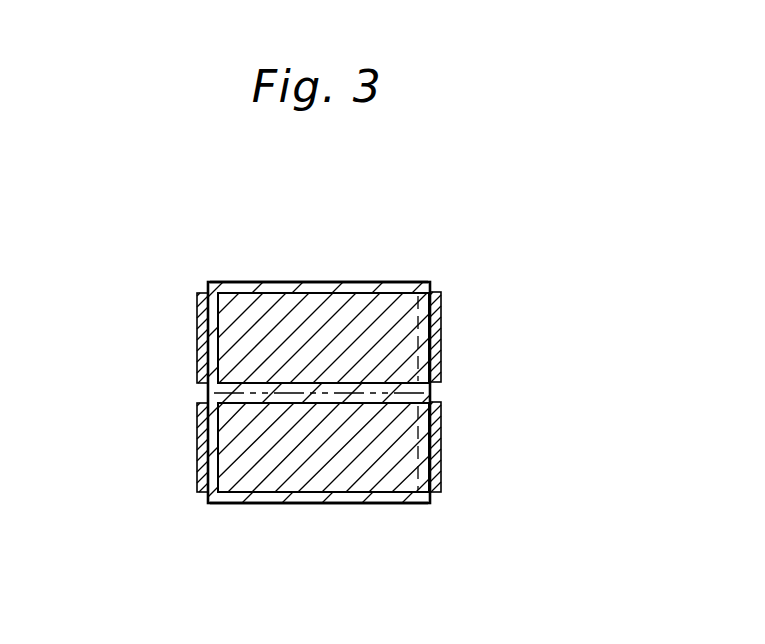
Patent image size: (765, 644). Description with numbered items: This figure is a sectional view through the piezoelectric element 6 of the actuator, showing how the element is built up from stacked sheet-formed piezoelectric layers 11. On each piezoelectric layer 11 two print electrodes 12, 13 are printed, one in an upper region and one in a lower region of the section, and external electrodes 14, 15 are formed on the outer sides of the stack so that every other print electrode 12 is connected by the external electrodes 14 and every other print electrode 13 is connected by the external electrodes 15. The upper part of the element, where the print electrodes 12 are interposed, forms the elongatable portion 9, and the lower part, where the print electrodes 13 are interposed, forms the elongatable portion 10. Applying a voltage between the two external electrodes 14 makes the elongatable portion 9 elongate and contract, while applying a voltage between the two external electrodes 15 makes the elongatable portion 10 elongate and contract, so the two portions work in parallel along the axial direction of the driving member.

The piezoelectric element 6 is at (206, 269).
The elongatable portion 9 is at (322, 279).
The elongatable portion 10 is at (306, 506).
The piezoelectric layer 11 is at (256, 290).
The print electrode 12 is at (369, 316).
The print electrode 13 is at (358, 478).
The external electrode 14 is at (197, 346).
The external electrode 15 is at (197, 453).